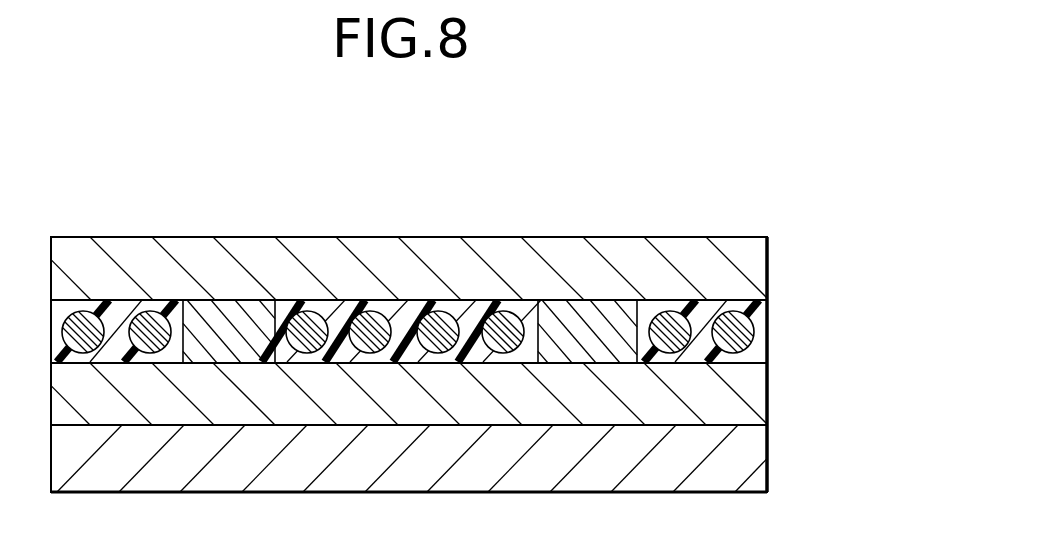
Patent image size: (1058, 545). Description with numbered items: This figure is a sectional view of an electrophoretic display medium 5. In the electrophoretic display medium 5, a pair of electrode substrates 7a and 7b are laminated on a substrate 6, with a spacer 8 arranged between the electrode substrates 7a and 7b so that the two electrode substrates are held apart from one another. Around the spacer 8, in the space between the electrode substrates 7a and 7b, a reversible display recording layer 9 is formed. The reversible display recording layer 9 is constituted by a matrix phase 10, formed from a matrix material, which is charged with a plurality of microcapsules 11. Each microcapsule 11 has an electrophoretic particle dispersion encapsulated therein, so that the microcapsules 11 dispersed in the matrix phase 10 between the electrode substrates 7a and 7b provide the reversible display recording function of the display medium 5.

The electrophoretic display medium 5 is at (486, 187).
The substrate 6 is at (755, 458).
The electrode substrate 7a is at (752, 397).
The electrode substrate 7b is at (752, 256).
The spacer 8 is at (210, 323).
The reversible display recording layer 9 is at (469, 301).
The matrix phase 10 is at (768, 308).
The microcapsule 11 is at (752, 338).